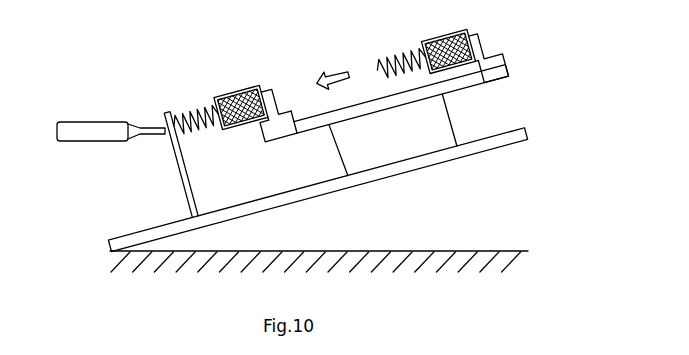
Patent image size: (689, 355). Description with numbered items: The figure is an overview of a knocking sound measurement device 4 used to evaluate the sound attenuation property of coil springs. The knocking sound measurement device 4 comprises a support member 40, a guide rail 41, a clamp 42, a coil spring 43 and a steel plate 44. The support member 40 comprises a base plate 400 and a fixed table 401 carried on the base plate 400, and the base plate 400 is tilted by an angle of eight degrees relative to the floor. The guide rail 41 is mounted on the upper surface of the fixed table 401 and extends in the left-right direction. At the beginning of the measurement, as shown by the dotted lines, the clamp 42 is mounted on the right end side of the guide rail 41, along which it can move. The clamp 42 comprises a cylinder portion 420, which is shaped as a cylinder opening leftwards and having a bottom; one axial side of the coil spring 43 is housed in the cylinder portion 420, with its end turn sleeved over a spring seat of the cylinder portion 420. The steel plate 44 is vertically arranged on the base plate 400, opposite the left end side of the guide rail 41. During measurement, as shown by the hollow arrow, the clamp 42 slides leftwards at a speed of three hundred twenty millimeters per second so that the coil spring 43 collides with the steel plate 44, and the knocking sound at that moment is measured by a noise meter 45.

The knocking sound measurement device 4 is at (313, 137).
The support member 40 is at (344, 137).
The base plate 400 is at (473, 141).
The fixed table 401 is at (452, 113).
The guide rail 41 is at (320, 128).
The clamp 42 is at (255, 87).
The cylinder portion 420 is at (250, 87).
The coil spring 43 is at (192, 110).
The steel plate 44 is at (178, 170).
The noise meter 45 is at (103, 128).